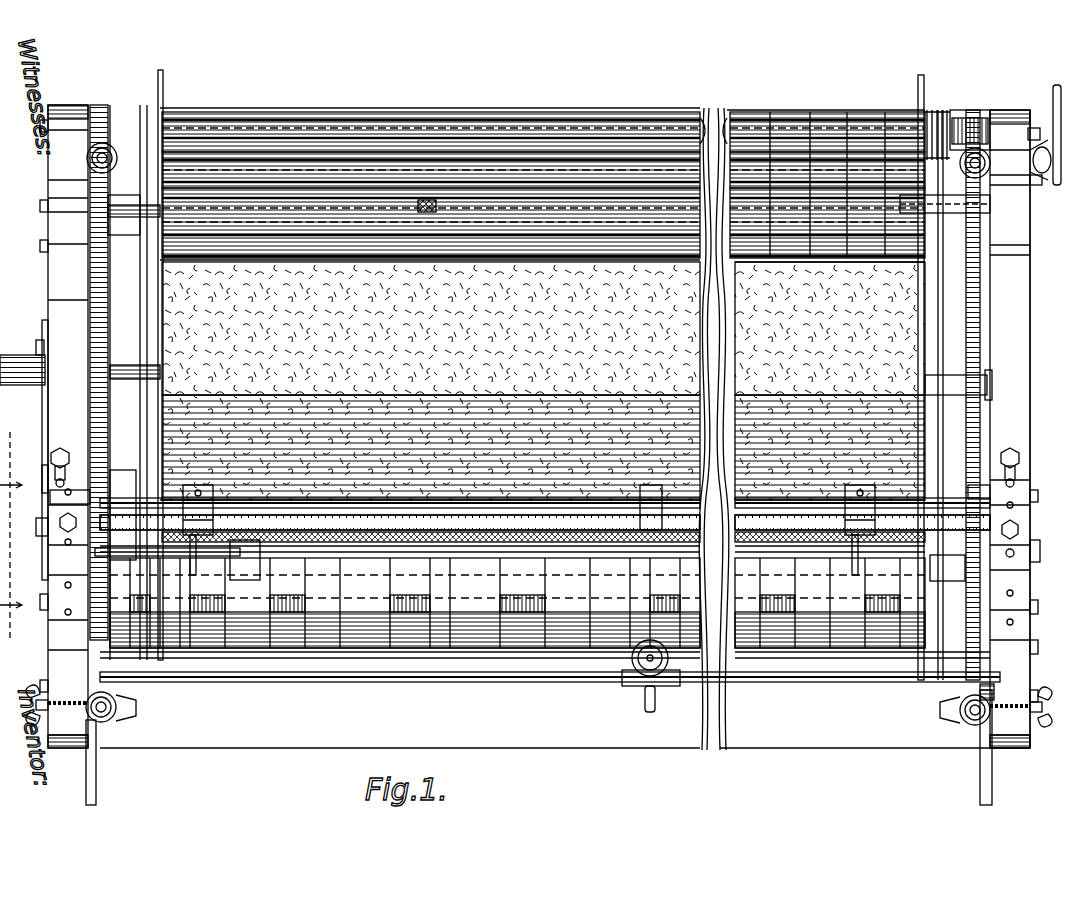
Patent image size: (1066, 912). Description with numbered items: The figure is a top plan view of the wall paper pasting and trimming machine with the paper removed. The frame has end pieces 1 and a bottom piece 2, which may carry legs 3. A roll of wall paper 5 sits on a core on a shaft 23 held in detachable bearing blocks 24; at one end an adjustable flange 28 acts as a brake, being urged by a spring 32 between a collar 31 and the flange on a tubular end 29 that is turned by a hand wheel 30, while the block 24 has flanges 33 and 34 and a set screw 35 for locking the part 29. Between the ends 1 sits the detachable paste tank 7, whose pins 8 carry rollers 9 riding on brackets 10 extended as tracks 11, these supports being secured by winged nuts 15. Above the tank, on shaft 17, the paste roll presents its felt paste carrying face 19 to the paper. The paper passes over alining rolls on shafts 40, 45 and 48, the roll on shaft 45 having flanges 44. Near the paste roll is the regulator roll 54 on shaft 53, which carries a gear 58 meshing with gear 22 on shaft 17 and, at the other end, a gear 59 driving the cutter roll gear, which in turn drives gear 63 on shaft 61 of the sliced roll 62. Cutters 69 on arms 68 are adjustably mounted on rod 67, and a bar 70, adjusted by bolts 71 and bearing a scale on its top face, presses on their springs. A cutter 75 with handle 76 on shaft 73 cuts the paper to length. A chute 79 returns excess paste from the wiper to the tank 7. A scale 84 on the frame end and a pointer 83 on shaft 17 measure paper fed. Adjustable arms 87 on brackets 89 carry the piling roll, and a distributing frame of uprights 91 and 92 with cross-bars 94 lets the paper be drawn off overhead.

The end piece 1 is at (1002, 316).
The bottom piece 2 is at (88, 105).
The leg 3 is at (653, 735).
The roll of wall paper 5 is at (11, 537).
The paste tank 7 is at (148, 285).
The pin 8 is at (150, 555).
The roller 9 is at (128, 215).
The bracket 10 is at (951, 395).
The track extension 11 is at (978, 420).
The winged nut 15 is at (26, 695).
The paste roll shaft 17 is at (125, 372).
The paste carrying face 19 is at (180, 430).
The gear 22 is at (88, 294).
The shaft 23 is at (222, 205).
The bearing block 24 is at (70, 110).
The adjustable flange 28 is at (920, 78).
The tubular end 29 is at (978, 112).
The hand wheel 30 is at (1057, 85).
The collar 31 is at (960, 110).
The spring 32 is at (938, 110).
The flange 33 is at (1030, 134).
The flange 34 is at (1042, 148).
The set screw 35 is at (1034, 164).
The shaft 40 is at (858, 118).
The flange 44 is at (338, 185).
The shaft 45 is at (600, 190).
The shaft 48 is at (270, 130).
The shaft 53 is at (70, 508).
The regulator roll 54 is at (85, 562).
The gear 58 is at (250, 555).
The gear 59 is at (986, 484).
The shaft 61 is at (392, 612).
The sliced roll 62 is at (612, 612).
The gear 63 is at (966, 630).
The rod 67 is at (350, 498).
The arm 68 is at (206, 530).
The cutter 69 is at (630, 508).
The bar 70 is at (440, 530).
The bolt 71 is at (1006, 553).
The shaft 73 is at (790, 684).
The cutter 75 is at (662, 672).
The handle 76 is at (644, 706).
The chute 79 is at (160, 624).
The pointer 83 is at (40, 380).
The scale 84 is at (42, 344).
The adjustable arm 87 is at (96, 786).
The bracket 89 is at (128, 580).
The upright 91 is at (116, 715).
The upright 92 is at (106, 145).
The cross-bar 94 is at (46, 424).